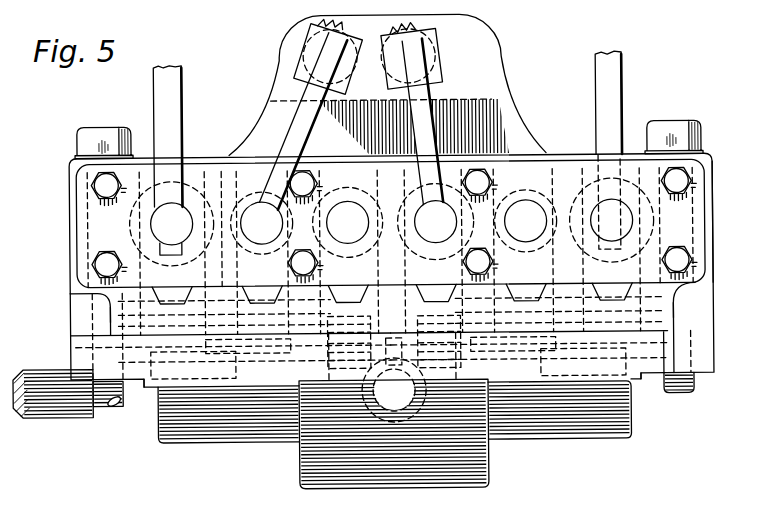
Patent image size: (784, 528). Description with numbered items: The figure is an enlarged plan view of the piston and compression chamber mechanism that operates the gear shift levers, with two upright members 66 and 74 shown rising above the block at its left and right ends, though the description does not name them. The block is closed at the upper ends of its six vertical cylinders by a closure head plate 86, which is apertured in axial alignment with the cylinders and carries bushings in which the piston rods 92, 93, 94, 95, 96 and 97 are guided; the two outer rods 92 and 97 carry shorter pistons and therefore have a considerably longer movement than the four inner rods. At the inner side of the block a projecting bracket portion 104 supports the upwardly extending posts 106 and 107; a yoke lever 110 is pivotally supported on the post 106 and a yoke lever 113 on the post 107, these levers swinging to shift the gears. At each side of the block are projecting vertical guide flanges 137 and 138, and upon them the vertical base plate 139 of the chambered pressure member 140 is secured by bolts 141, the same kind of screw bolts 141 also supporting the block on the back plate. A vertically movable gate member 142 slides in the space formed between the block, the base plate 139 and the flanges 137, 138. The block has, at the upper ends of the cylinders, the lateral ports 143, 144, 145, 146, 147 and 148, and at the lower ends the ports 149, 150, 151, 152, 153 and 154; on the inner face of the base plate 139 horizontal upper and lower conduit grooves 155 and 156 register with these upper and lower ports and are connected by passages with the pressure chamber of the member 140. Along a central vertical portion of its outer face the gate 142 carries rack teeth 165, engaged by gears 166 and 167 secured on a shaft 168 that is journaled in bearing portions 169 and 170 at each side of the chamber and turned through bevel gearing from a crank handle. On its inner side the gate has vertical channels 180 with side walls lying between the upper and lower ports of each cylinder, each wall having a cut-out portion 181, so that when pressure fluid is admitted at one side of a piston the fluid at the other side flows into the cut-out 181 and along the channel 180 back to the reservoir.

The push rod 66 is at (165, 96).
The push rod 74 is at (610, 109).
The closure head plate 86 is at (677, 224).
The piston rod 92 is at (614, 212).
The piston rod 93 is at (520, 205).
The piston rod 94 is at (434, 212).
The piston rod 95 is at (352, 212).
The piston rod 96 is at (262, 210).
The piston rod 97 is at (178, 212).
The bracket portion 104 is at (512, 116).
The post 106 is at (305, 34).
The post 107 is at (433, 34).
The yoke lever 110 is at (428, 110).
The yoke lever 113 is at (297, 110).
The guide flange 137 is at (700, 319).
The guide flange 138 is at (110, 318).
The base plate 139 is at (213, 372).
The pressure member 140 is at (487, 467).
The bolt 141 is at (90, 140).
The gate member 142 is at (135, 310).
The lateral port 143 is at (611, 250).
The lateral port 144 is at (525, 251).
The lateral port 145 is at (435, 251).
The lateral port 146 is at (347, 252).
The lateral port 147 is at (261, 253).
The lateral port 148 is at (171, 254).
The port 149 is at (612, 286).
The port 150 is at (526, 287).
The port 151 is at (436, 287).
The port 152 is at (348, 288).
The port 153 is at (262, 289).
The port 154 is at (172, 290).
The upper conduit groove 155 is at (548, 371).
The lower conduit groove 156 is at (214, 371).
The rack teeth 165 is at (492, 341).
The gear 166 is at (440, 452).
The gear 167 is at (330, 492).
The shaft 168 is at (57, 412).
The bearing portion 169 is at (527, 442).
The bearing portion 170 is at (278, 415).
The vertical channel 180 is at (258, 325).
The cut-out portion 181 is at (208, 351).